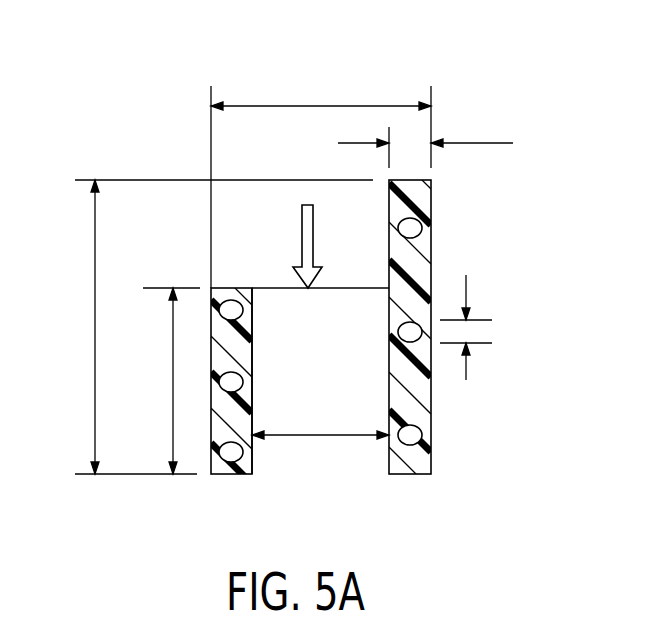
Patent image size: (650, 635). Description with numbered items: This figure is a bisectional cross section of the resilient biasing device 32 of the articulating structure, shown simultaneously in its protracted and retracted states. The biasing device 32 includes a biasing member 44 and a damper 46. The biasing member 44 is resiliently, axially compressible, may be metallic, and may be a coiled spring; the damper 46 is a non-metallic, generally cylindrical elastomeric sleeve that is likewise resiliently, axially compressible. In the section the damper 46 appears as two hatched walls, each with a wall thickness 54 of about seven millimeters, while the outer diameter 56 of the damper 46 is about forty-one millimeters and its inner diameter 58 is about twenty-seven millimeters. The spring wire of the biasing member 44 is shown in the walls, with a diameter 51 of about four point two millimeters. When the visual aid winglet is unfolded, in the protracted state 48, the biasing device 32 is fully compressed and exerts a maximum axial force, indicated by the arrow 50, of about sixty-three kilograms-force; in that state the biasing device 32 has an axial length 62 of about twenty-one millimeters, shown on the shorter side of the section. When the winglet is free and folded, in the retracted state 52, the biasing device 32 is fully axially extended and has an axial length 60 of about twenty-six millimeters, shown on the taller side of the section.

The resilient biasing device 32 is at (312, 278).
The biasing member 44 is at (412, 435).
The damper 46 is at (253, 332).
The protracted state 48 is at (256, 410).
The arrow 50 is at (307, 240).
The diameter of the spring wire 51 is at (465, 288).
The retracted state 52 is at (408, 475).
The wall thickness 54 is at (478, 143).
The outer diameter 56 is at (322, 103).
The inner diameter 58 is at (325, 433).
The axial length 60 is at (93, 310).
The axial length 62 is at (172, 378).